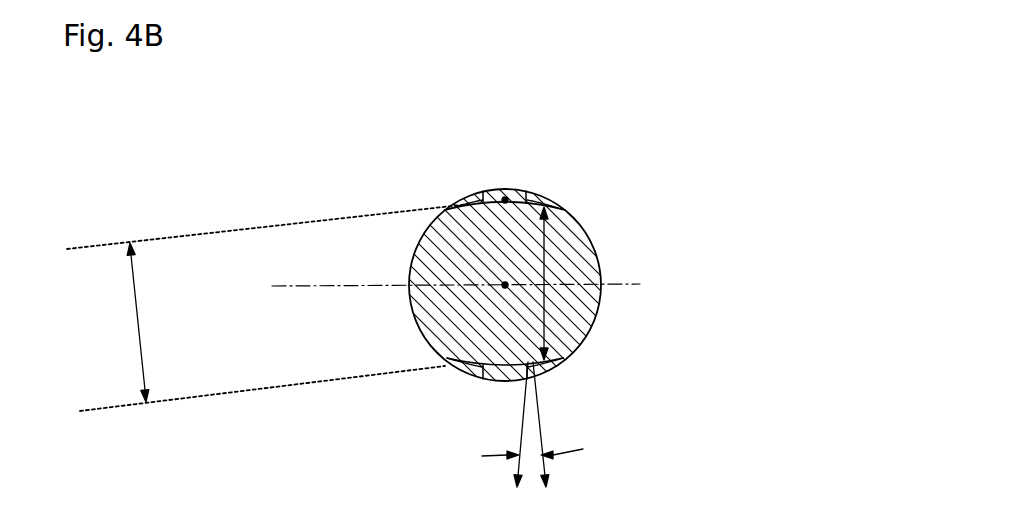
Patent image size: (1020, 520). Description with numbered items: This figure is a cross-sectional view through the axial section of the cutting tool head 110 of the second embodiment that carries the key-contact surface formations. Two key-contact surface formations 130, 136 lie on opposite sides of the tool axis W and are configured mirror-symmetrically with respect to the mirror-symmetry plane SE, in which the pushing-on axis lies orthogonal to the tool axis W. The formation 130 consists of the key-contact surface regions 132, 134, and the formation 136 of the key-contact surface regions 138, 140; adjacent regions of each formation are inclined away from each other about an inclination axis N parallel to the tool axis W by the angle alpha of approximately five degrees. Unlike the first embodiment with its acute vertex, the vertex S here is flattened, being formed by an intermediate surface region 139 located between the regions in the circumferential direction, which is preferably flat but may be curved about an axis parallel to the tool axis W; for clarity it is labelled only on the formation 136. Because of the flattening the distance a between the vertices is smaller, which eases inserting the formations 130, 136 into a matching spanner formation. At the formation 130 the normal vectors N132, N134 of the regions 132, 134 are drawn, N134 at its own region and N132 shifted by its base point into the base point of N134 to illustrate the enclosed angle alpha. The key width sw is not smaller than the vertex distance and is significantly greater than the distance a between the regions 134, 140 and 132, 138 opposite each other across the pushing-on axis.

The tool head 110 is at (637, 355).
The key-contact surface formation 130 is at (451, 397).
The key-contact surface region 132 is at (455, 366).
The key-contact surface region 134 is at (549, 368).
The key-contact surface formation 136 is at (431, 178).
The key-contact surface region 138 is at (458, 203).
The intermediate surface region 139 is at (507, 199).
The key-contact surface region 140 is at (545, 205).
The normal vector N132 is at (513, 464).
The normal vector N134 is at (551, 463).
The distance a is at (546, 241).
The inclination axis N is at (460, 203).
The tool axis W is at (503, 285).
The mirror-symmetry plane SE is at (622, 282).
The key width sw is at (137, 312).
The angle alpha is at (532, 443).